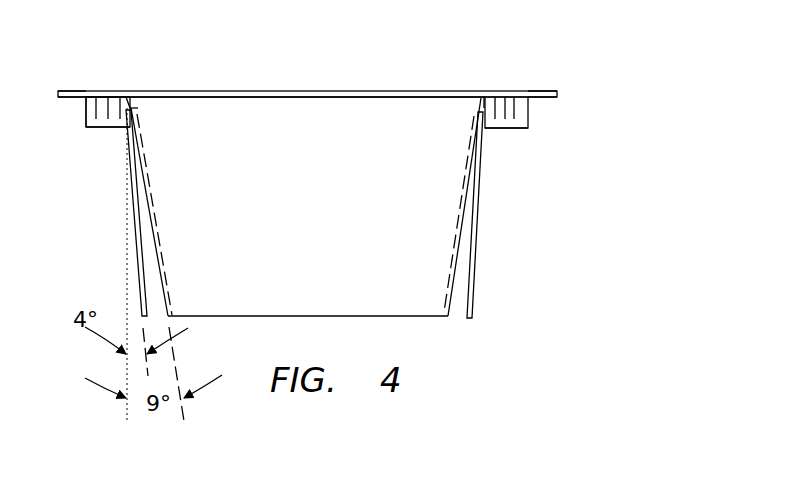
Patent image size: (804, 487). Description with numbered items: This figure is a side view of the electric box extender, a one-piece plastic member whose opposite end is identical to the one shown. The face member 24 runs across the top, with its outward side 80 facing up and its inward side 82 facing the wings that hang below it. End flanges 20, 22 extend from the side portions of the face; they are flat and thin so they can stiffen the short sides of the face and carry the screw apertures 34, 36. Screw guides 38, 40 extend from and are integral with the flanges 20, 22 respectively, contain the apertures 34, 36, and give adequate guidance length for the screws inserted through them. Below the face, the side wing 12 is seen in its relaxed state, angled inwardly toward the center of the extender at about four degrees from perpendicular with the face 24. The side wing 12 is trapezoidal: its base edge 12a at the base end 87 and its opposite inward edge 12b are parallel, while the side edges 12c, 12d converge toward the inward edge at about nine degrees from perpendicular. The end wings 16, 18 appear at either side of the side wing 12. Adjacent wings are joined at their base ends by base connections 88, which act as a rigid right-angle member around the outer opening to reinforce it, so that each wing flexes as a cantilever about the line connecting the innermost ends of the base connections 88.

The side wing 12 is at (285, 206).
The base edge 12a is at (268, 98).
The inward edge 12b is at (393, 316).
The side edge 12c is at (150, 213).
The side edge 12d is at (469, 197).
The end wing 16 is at (140, 268).
The end wing 18 is at (475, 247).
The end flange 20 is at (62, 91).
The end flange 22 is at (545, 92).
The face member 24 is at (374, 91).
The aperture 34 is at (100, 100).
The aperture 36 is at (513, 100).
The screw guide 38 is at (124, 128).
The screw guide 40 is at (494, 128).
The outward side 80 is at (80, 91).
The inward side 82 is at (80, 98).
The base end 87 is at (152, 112).
The base connection 88 is at (148, 99).